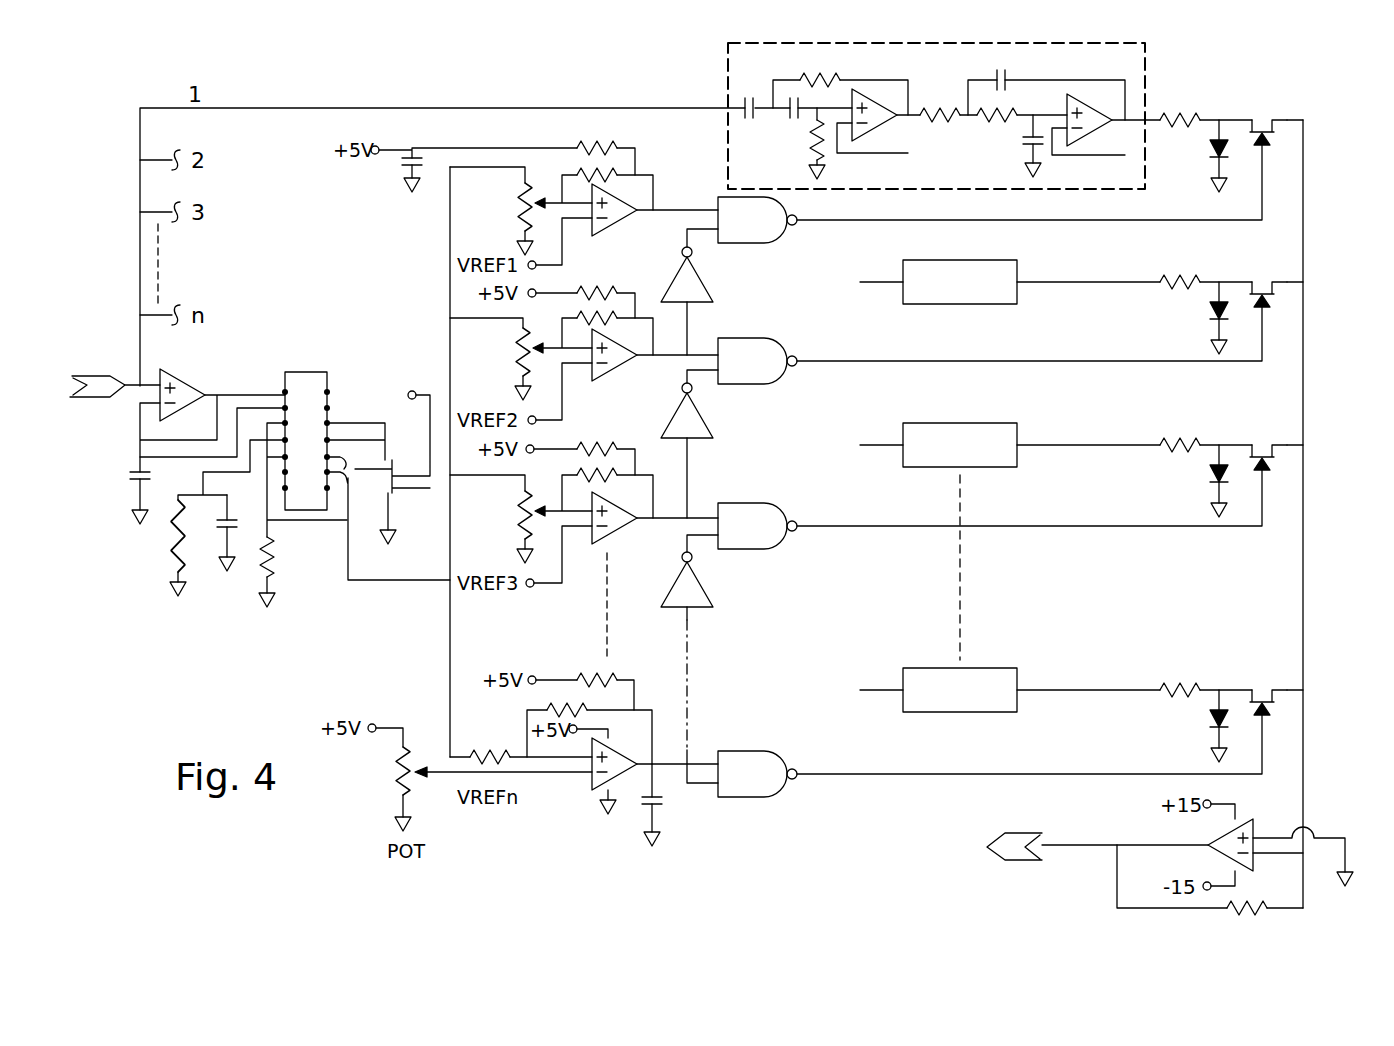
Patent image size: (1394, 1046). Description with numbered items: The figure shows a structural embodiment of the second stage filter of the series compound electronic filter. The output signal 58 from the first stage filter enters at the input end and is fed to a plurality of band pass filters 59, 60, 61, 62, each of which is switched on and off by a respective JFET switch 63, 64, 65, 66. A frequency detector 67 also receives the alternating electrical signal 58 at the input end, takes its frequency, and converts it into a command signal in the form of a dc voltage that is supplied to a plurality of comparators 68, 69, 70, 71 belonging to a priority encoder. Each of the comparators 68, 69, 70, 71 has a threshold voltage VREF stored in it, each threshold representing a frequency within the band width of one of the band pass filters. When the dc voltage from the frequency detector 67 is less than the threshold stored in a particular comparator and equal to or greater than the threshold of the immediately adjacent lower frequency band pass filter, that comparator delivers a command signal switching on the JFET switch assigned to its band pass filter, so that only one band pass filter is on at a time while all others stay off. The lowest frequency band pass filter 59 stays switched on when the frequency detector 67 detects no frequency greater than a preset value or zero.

The output signal from the first stage filter 58 is at (95, 368).
The band pass filter 59 is at (728, 75).
The band pass filter 60 is at (997, 302).
The band pass filter 61 is at (997, 466).
The band pass filter 62 is at (992, 710).
The JFET switch 63 is at (1273, 147).
The JFET switch 64 is at (1272, 307).
The JFET switch 65 is at (1272, 470).
The JFET switch 66 is at (1272, 715).
The frequency detector 67 is at (300, 538).
The comparator 68 is at (507, 222).
The comparator 69 is at (510, 360).
The comparator 70 is at (507, 530).
The comparator 71 is at (508, 727).